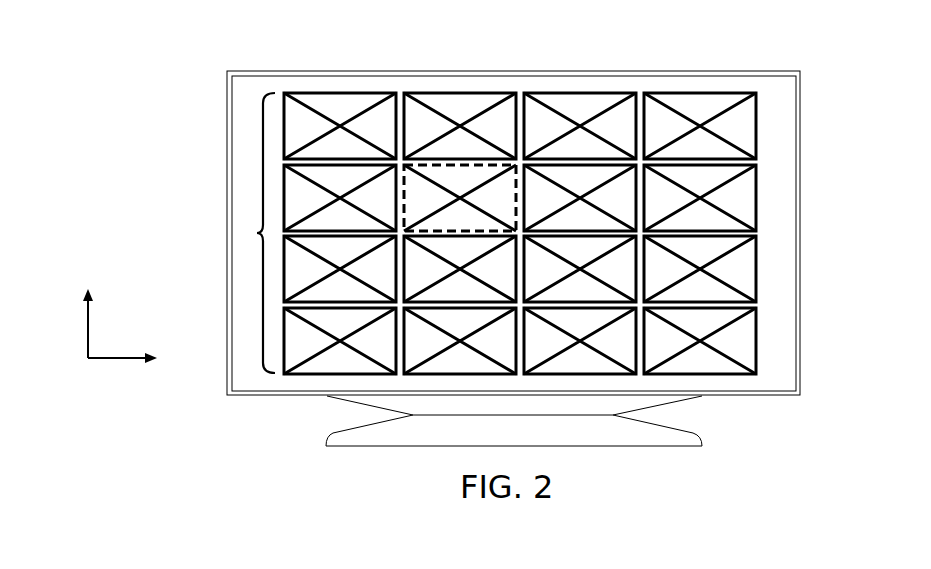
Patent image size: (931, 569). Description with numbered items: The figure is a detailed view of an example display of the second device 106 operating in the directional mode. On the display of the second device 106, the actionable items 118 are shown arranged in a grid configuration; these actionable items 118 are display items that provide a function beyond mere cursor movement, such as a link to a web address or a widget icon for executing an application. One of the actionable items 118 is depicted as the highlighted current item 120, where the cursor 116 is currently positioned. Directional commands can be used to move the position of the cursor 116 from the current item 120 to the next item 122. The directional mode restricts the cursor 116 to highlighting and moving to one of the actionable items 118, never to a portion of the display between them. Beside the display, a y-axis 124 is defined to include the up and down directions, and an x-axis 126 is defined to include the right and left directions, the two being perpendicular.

The second device 106 is at (233, 52).
The cursor 116 is at (472, 123).
The actionable items 118 is at (257, 233).
The current item 120 is at (447, 177).
The next item 122 is at (617, 203).
The y-axis 124 is at (86, 335).
The x-axis 126 is at (105, 360).